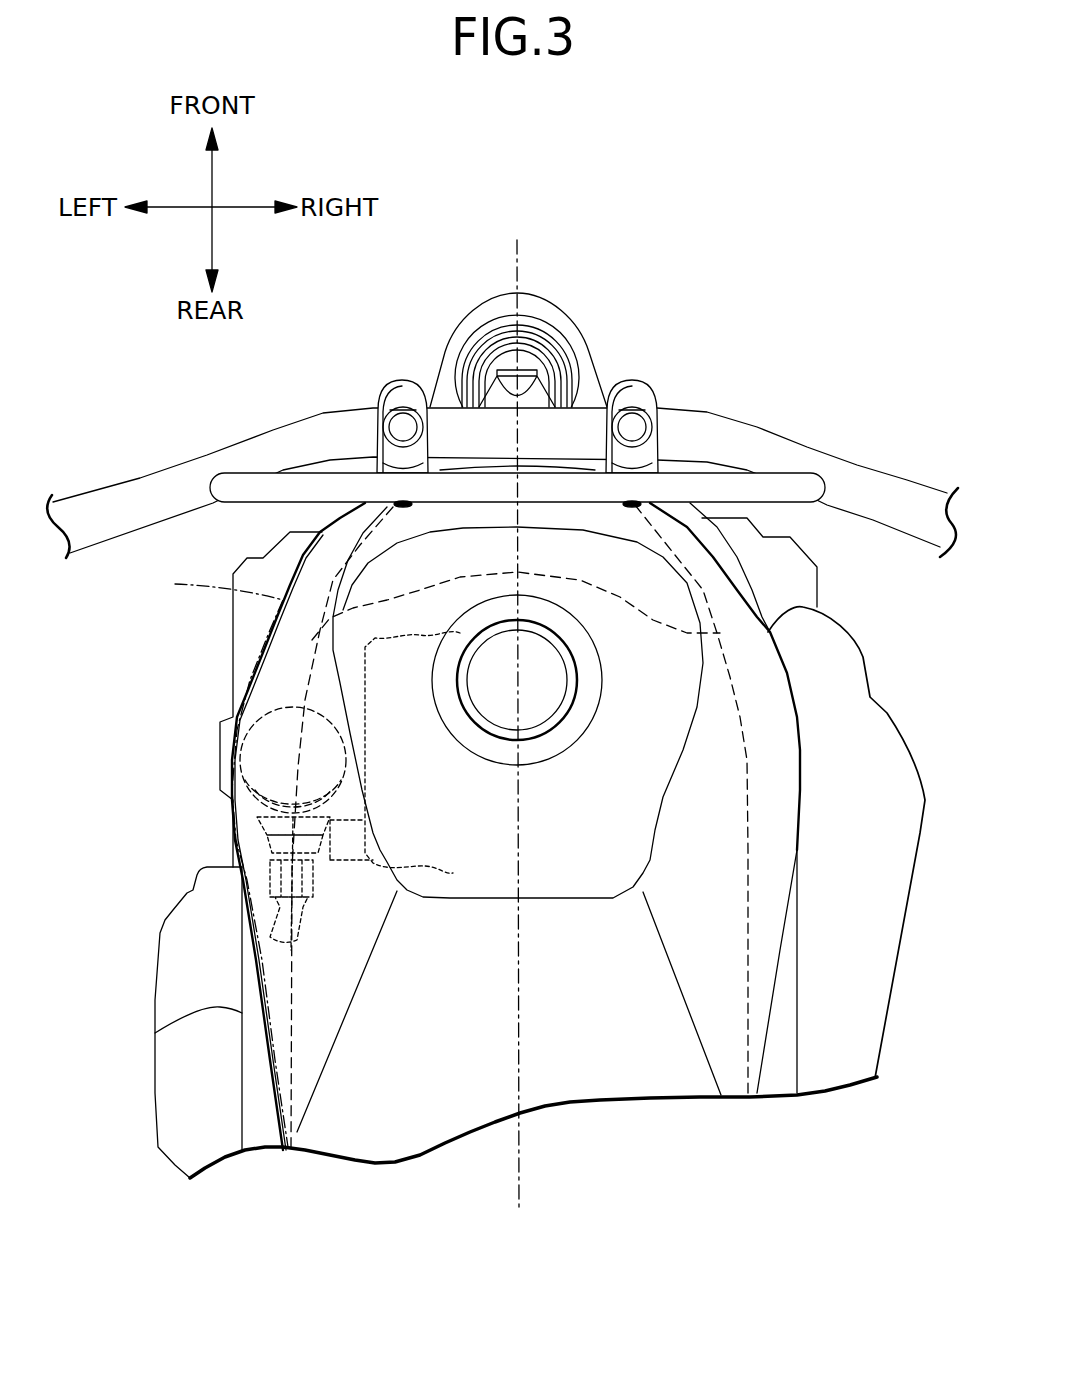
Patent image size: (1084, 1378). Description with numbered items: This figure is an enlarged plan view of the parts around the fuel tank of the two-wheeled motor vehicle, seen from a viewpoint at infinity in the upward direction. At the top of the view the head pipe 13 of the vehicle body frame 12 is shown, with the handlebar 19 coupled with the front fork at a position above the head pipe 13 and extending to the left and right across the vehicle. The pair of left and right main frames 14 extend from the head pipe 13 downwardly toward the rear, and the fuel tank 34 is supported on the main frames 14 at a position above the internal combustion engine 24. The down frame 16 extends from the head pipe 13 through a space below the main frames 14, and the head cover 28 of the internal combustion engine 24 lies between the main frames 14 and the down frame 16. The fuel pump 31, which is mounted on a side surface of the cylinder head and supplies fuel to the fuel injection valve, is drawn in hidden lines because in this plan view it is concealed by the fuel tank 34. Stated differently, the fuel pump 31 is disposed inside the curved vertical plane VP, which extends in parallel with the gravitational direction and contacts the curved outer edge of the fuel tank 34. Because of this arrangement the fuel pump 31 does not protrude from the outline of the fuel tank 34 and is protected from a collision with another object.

The vehicle body frame 12 is at (597, 357).
The head pipe 13 is at (503, 357).
The main frames 14 is at (155, 1033).
The down frame 16 is at (703, 587).
The handlebar 19 is at (876, 490).
The internal combustion engine 24 is at (172, 902).
The head cover 28 is at (365, 680).
The fuel pump 31 is at (266, 762).
The fuel tank 34 is at (717, 732).
The curved vertical plane VP is at (210, 859).